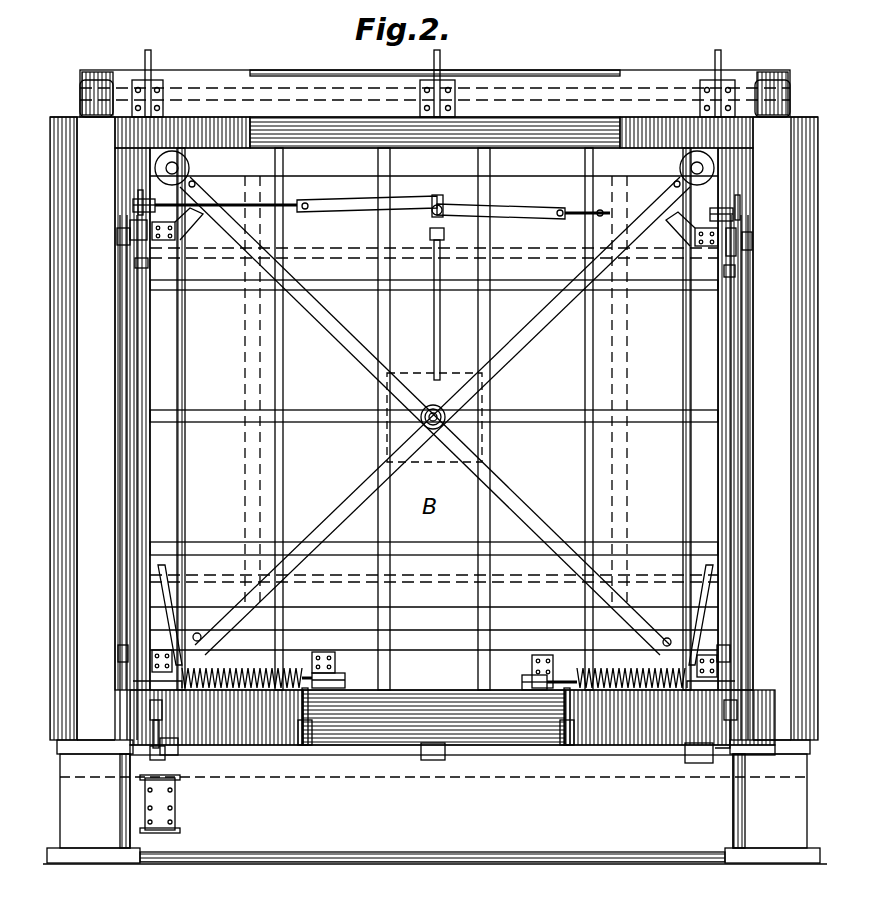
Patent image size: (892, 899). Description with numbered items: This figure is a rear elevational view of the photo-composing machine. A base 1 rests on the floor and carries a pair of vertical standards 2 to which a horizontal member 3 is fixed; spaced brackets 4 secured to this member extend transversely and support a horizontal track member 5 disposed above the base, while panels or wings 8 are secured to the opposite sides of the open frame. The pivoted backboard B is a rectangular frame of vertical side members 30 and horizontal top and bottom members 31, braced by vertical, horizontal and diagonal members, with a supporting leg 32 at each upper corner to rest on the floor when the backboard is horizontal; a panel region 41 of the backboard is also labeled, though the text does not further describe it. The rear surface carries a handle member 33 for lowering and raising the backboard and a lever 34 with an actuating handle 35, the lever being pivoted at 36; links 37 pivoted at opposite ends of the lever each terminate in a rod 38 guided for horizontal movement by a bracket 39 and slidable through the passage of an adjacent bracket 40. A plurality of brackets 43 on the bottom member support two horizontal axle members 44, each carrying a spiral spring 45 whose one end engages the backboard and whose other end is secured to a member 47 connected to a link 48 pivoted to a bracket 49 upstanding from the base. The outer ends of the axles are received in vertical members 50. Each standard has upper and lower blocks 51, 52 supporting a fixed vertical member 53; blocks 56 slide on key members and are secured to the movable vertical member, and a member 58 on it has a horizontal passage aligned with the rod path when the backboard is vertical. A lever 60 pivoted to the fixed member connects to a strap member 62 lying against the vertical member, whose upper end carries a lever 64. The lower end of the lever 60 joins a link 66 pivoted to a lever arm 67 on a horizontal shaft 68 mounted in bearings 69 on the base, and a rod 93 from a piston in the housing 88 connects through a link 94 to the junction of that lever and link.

The base 1 is at (325, 852).
The vertical standard 2 is at (82, 90).
The horizontal member 3 is at (225, 90).
The bracket 4 is at (152, 62).
The horizontal track member 5 is at (300, 72).
The panel or wing 8 is at (60, 775).
The vertical side member 30 is at (165, 352).
The horizontal top and bottom member 31 is at (437, 660).
The supporting leg 32 is at (178, 165).
The handle member 33 is at (396, 292).
The lever 34 is at (434, 196).
The actuating handle 35 is at (441, 300).
The pivot 36 is at (430, 226).
The link 37 is at (332, 200).
The rod 38 is at (598, 205).
The bracket 39 is at (190, 228).
The bracket 40 is at (133, 207).
The panel 41 is at (527, 434).
The bracket 43 is at (172, 660).
The axle member 44 is at (313, 655).
The spiral spring 45 is at (228, 670).
The member 47 is at (335, 676).
The link 48 is at (308, 700).
The bracket 49 is at (305, 748).
The vertical member 50 is at (127, 352).
The upper block 51 is at (117, 236).
The lower block 52 is at (118, 652).
The fixed vertical member 53 is at (120, 316).
The block 56 is at (142, 240).
The member 58 is at (138, 198).
The lever 60 is at (140, 628).
The strap member 62 is at (137, 388).
The lever 64 is at (135, 264).
The link 66 is at (150, 706).
The lever arm 67 is at (153, 728).
The horizontal shaft 68 is at (300, 755).
The bearing 69 is at (176, 756).
The housing 88 is at (145, 794).
The rod 93 is at (150, 752).
The link 94 is at (133, 680).